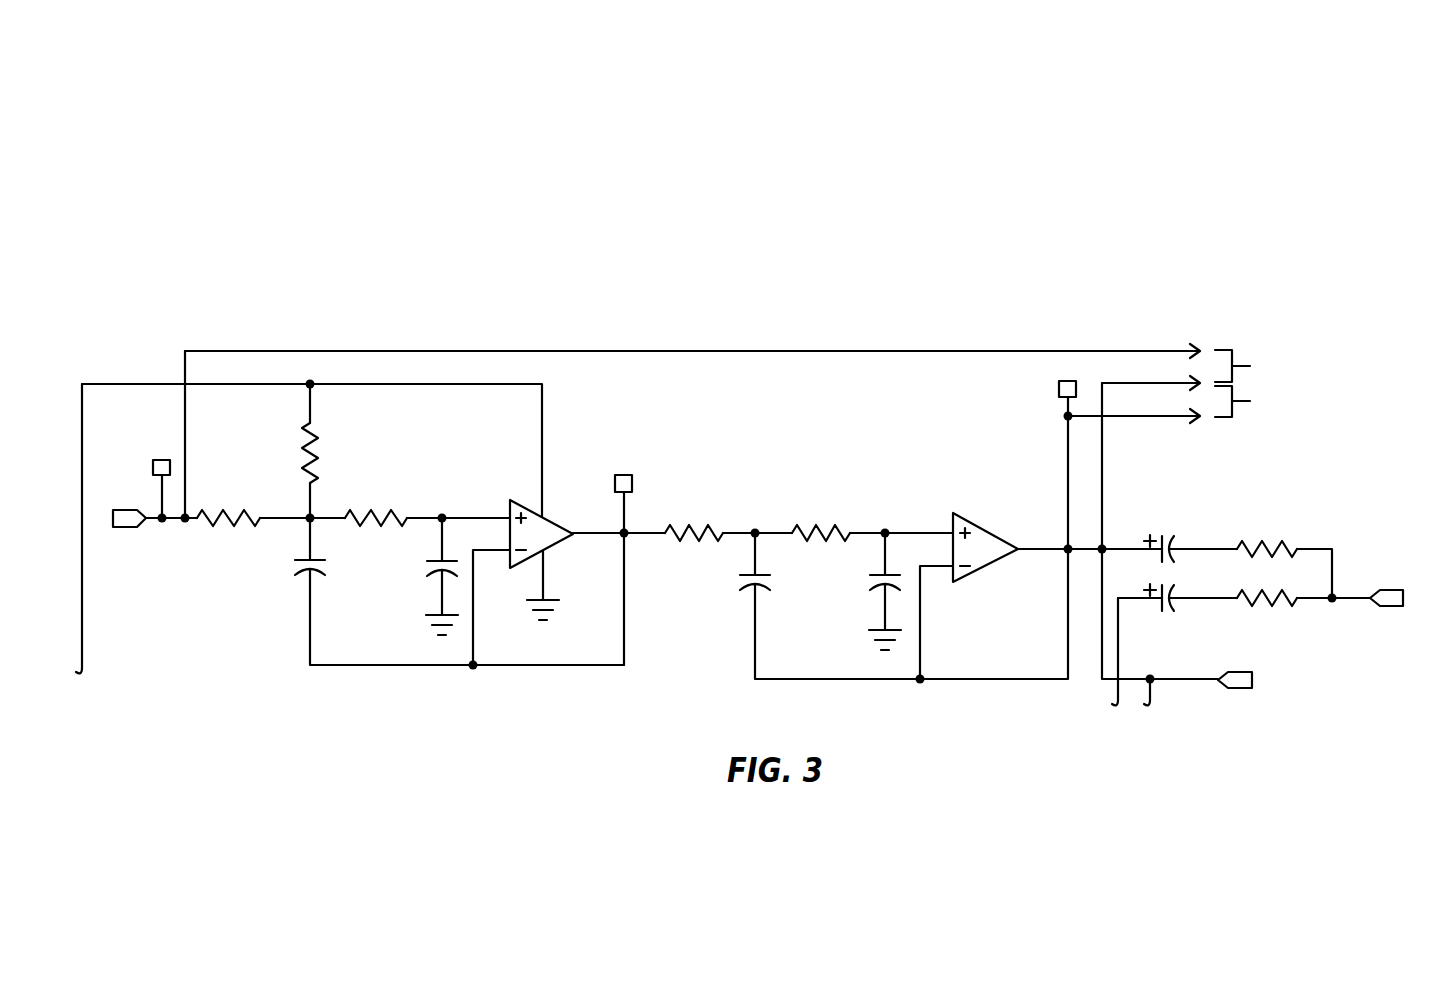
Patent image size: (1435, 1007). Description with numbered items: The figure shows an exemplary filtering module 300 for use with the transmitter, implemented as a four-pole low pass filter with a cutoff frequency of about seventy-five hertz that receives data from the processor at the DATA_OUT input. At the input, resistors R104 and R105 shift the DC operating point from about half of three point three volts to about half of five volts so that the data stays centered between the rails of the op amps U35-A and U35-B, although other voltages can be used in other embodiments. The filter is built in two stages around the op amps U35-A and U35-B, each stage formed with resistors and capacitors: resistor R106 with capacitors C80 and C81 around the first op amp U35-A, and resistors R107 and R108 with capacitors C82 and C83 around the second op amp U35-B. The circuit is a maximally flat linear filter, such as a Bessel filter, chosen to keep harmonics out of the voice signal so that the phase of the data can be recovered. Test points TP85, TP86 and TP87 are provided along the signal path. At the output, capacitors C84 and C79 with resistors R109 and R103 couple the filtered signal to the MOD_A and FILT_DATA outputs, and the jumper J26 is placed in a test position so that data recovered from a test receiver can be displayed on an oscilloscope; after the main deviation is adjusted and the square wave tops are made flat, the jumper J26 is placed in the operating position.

The filtering module 300 is at (752, 468).
The resistor R104 is at (230, 492).
The resistor R105 is at (342, 443).
The resistor R106 is at (380, 492).
The resistor R107 is at (697, 507).
The resistor R108 is at (822, 505).
The resistor R109 is at (1271, 523).
The resistor R103 is at (1271, 627).
The capacitor C79 is at (1167, 626).
The capacitor C80 is at (286, 574).
The capacitor C81 is at (406, 592).
The capacitor C82 is at (730, 588).
The capacitor C83 is at (856, 607).
The capacitor C84 is at (1169, 522).
The op amp U35-A is at (520, 531).
The op amp U35-B is at (996, 531).
The test point TP85 is at (161, 475).
The test point TP86 is at (626, 470).
The test point TP87 is at (1071, 375).
The jumper J26 is at (1296, 383).